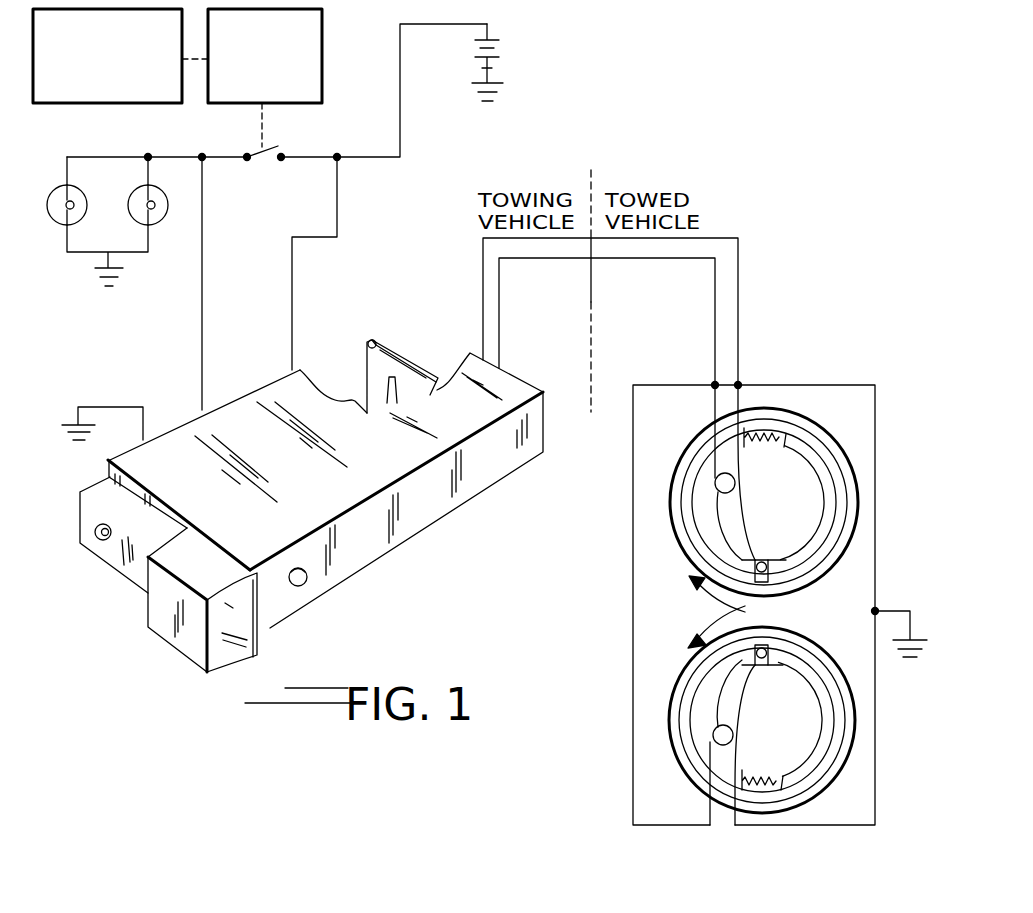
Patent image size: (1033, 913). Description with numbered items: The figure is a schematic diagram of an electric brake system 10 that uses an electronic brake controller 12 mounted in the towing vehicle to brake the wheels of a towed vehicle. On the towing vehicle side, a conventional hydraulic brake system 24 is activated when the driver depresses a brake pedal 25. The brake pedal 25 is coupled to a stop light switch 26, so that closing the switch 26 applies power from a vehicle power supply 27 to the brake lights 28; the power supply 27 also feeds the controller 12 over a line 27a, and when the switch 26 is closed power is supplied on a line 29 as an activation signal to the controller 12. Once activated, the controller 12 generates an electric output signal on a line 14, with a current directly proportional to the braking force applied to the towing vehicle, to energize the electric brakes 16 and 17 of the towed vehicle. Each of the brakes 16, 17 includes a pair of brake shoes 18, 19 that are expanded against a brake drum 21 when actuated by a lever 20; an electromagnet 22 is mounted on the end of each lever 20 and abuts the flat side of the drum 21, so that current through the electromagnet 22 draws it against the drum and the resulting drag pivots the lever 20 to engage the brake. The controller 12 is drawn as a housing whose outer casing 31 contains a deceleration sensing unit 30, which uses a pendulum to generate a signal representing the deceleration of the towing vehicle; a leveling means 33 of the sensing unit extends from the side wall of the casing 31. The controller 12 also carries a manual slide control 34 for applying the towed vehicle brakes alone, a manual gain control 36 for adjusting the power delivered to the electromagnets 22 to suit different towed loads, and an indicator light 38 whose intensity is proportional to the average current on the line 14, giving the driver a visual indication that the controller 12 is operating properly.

The electric brake system 10 is at (558, 591).
The electronic brake controller 12 is at (463, 507).
The line 14 is at (538, 258).
The electric brake 16 is at (838, 447).
The electric brake 17 is at (806, 804).
The brake shoe 18 is at (693, 470).
The brake shoe 19 is at (830, 550).
The lever 20 is at (742, 518).
The brake drum 21 is at (808, 590).
The electromagnet 22 is at (750, 470).
The hydraulic brake system 24 is at (100, 104).
The brake pedal 25 is at (322, 70).
The stop light switch 26 is at (258, 160).
The vehicle power supply 27 is at (495, 36).
The line 27a is at (337, 200).
The brake light 28 is at (58, 224).
The line 29 is at (203, 342).
The deceleration sensing unit 30 is at (413, 352).
The outer casing 31 is at (275, 395).
The leveling means 33 is at (372, 340).
The manual slide control 34 is at (222, 666).
The manual gain control 36 is at (304, 586).
The indicator light 38 is at (100, 542).